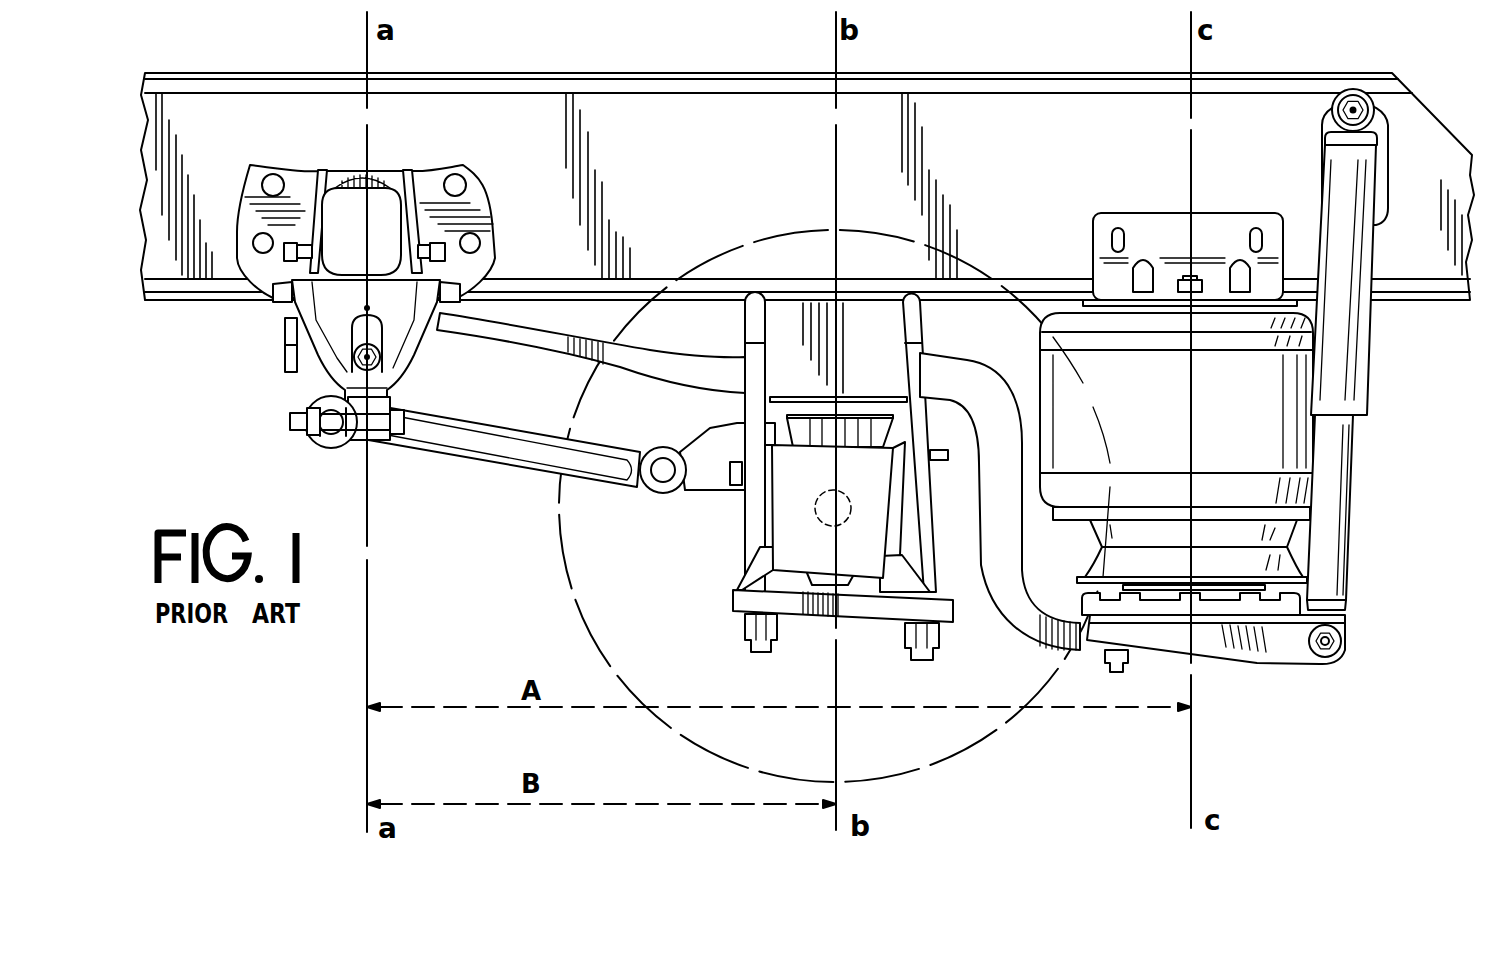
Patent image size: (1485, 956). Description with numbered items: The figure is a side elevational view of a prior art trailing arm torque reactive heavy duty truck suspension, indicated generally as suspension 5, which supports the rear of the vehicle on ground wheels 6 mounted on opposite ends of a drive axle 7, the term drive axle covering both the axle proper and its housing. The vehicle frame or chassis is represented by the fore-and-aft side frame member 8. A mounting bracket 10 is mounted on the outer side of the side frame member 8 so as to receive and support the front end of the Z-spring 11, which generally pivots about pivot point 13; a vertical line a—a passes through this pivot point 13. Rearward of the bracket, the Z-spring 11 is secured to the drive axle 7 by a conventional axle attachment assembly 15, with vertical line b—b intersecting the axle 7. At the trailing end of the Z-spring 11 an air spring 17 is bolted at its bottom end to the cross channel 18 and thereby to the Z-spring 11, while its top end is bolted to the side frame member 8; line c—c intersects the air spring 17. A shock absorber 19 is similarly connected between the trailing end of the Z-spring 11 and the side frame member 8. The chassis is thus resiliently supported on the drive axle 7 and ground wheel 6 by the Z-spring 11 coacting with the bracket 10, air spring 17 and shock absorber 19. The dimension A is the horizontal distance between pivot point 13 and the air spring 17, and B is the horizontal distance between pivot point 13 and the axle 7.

The trailing arm torque reactive suspension 5 is at (520, 566).
The ground wheels 6 is at (556, 505).
The drive axle 7 is at (762, 518).
The side frame member 8 is at (741, 62).
The mounting bracket 10 is at (275, 305).
The Z-spring 11 is at (540, 366).
The pivot point 13 is at (356, 327).
The axle attachment assembly 15 is at (723, 602).
The air spring 17 is at (1043, 360).
The cross channel 18 is at (1278, 605).
The shock absorber 19 is at (1365, 494).